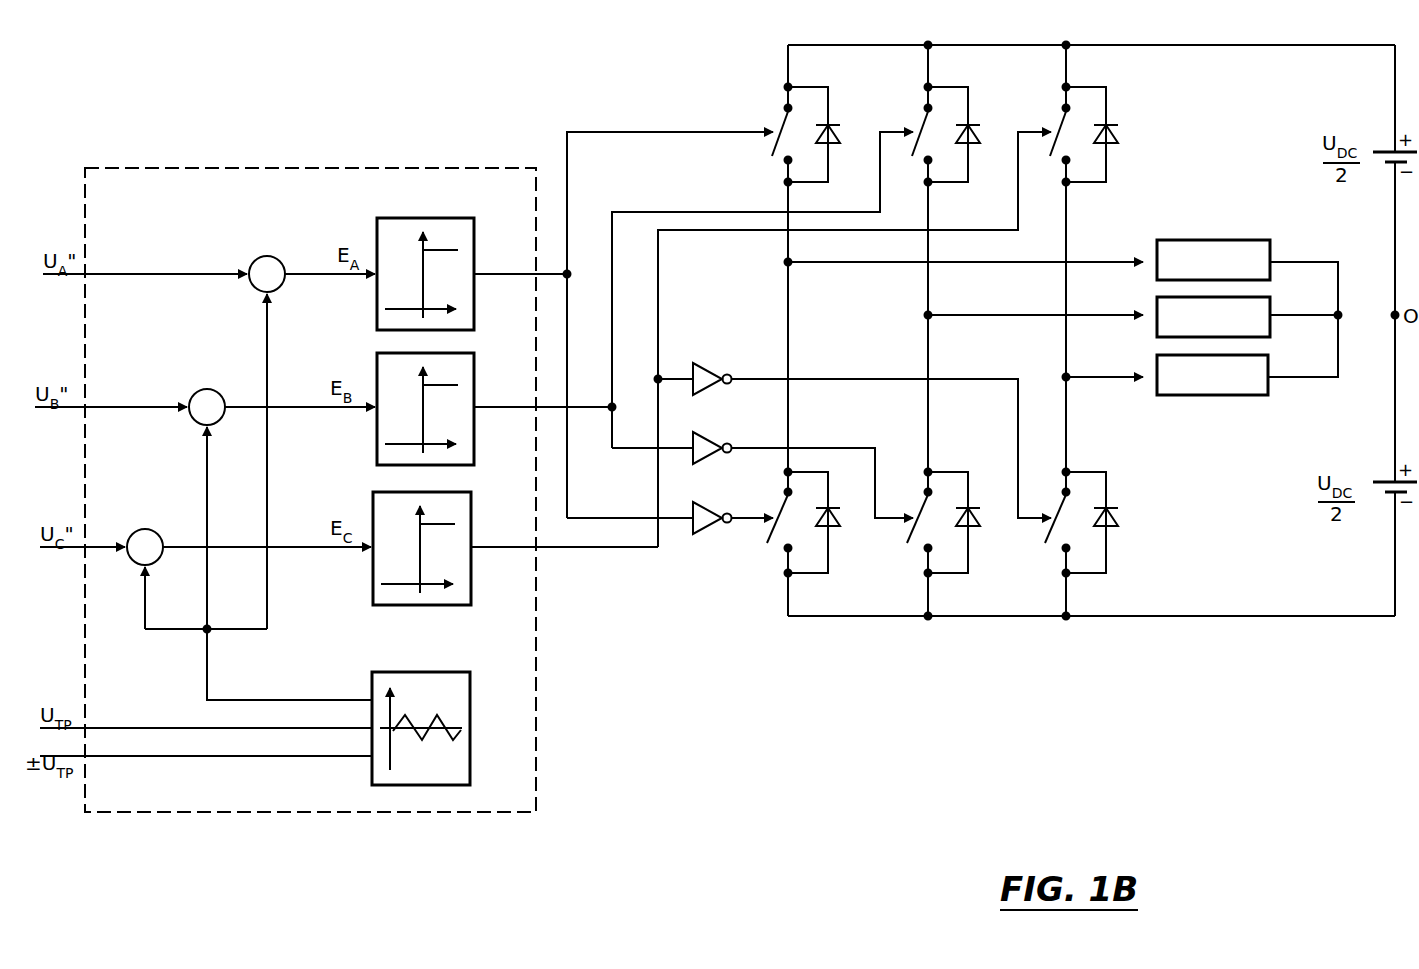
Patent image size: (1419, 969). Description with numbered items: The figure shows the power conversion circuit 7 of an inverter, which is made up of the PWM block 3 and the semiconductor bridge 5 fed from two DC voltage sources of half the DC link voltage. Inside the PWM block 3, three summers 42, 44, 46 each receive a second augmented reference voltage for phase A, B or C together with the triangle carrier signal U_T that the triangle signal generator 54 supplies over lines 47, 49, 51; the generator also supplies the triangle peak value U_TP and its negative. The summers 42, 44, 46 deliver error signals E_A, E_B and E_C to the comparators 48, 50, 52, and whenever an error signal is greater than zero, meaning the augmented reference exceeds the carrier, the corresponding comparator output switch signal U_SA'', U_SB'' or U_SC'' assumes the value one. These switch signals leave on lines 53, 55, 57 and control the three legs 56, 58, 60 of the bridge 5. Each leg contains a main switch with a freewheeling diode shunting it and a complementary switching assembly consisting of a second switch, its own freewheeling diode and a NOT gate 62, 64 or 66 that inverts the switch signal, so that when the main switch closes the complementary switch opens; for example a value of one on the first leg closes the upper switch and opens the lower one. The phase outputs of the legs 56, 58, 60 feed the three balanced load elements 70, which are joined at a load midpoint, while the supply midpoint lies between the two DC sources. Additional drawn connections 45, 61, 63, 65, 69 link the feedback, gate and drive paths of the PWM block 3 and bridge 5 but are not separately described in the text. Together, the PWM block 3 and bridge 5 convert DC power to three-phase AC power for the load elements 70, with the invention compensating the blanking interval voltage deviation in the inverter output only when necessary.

The PWM block 3 is at (536, 782).
The semiconductor bridge 5 is at (1398, 716).
The power conversion circuit 7 is at (66, 837).
The summer 42 is at (272, 256).
The summer 44 is at (212, 389).
The summer 46 is at (150, 529).
The feedback line phase C 45 is at (100, 548).
The line 47 is at (267, 607).
The line 49 is at (207, 583).
The line 51 is at (160, 630).
The comparator 48 is at (405, 216).
The comparator 50 is at (377, 358).
The comparator 52 is at (373, 497).
The line 53 is at (513, 277).
The line 55 is at (513, 410).
The line 57 is at (578, 549).
The triangle signal generator 54 is at (400, 670).
The first leg 56 is at (821, 627).
The second leg 58 is at (961, 627).
The third leg 60 is at (1098, 627).
The gate line switch S1 61 is at (598, 518).
The NOT gate 62 is at (710, 504).
The gate line switch S2 63 is at (712, 212).
The NOT gate 64 is at (710, 434).
The gate line switch S2* 65 is at (866, 448).
The NOT gate 66 is at (710, 365).
The gate line switch S3* 69 is at (870, 379).
The balanced load elements 70 is at (1237, 240).